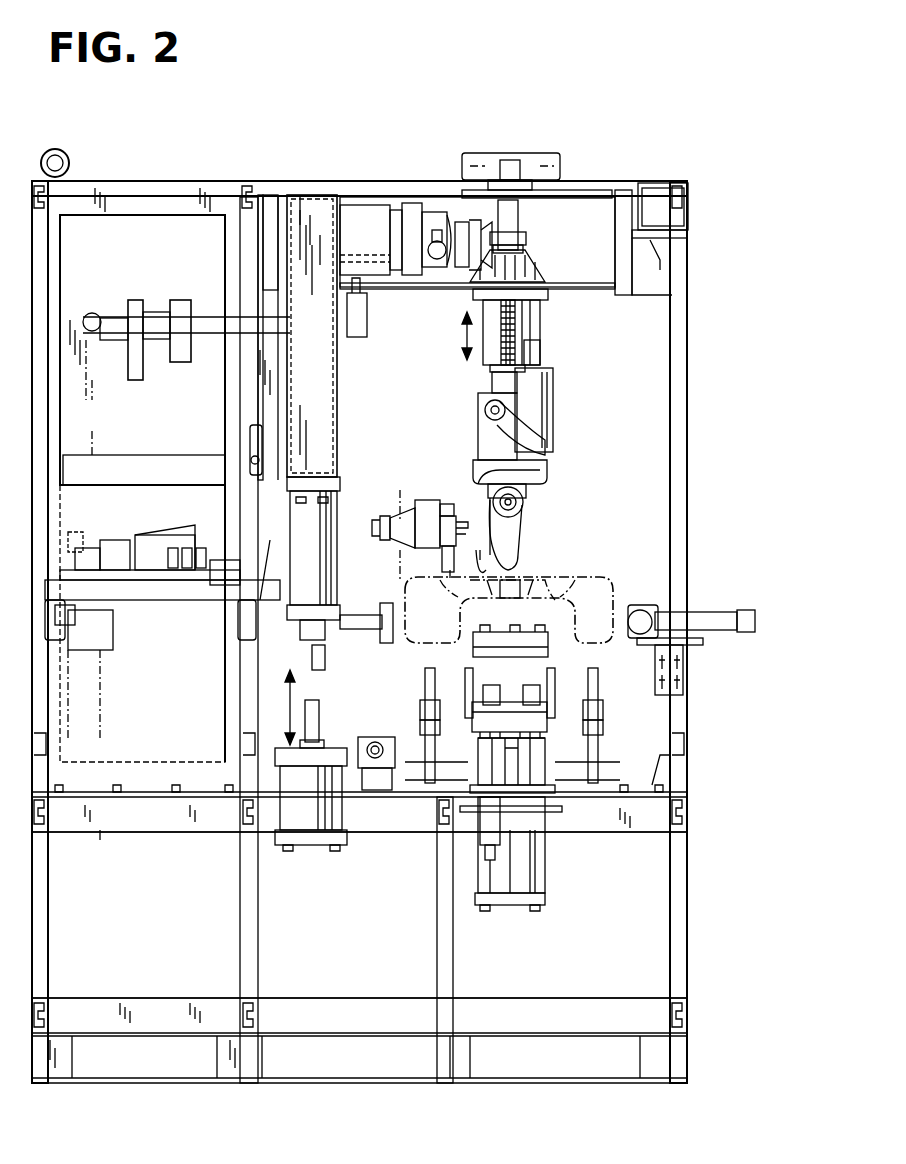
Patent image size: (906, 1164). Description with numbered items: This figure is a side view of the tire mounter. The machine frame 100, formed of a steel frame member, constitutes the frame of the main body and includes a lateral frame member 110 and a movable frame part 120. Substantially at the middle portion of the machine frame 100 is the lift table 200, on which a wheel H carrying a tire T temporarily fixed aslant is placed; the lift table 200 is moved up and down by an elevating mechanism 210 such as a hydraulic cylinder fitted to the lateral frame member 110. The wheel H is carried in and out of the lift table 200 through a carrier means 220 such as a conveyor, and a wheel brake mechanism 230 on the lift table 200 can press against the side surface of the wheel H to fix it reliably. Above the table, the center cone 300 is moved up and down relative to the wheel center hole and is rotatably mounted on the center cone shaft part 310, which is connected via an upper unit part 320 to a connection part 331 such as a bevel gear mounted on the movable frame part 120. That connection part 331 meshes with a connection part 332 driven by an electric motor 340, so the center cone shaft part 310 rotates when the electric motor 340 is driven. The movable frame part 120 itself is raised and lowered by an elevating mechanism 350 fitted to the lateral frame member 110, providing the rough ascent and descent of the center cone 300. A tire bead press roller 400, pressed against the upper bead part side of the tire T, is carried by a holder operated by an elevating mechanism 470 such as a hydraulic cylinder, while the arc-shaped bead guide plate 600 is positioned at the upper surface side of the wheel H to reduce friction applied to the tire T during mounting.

The machine frame 100 is at (690, 333).
The lateral frame member 110 is at (640, 832).
The movable frame part 120 is at (445, 195).
The lift table 200 is at (548, 645).
The elevating mechanism 210 is at (527, 878).
The carrier means 220 is at (556, 690).
The wheel brake mechanism 230 is at (480, 622).
The center cone 300 is at (520, 545).
The center cone shaft part 310 is at (492, 385).
The upper unit part 320 is at (541, 334).
The connection part 331 is at (553, 245).
The connection part 332 is at (565, 193).
The electric motor 340 is at (360, 212).
The elevating mechanism 350 is at (308, 828).
The tire bead press roller 400 is at (490, 495).
The elevating mechanism 470 is at (545, 400).
The bead guide plate 600 is at (493, 577).
The tire T is at (617, 582).
The wheel H is at (600, 605).